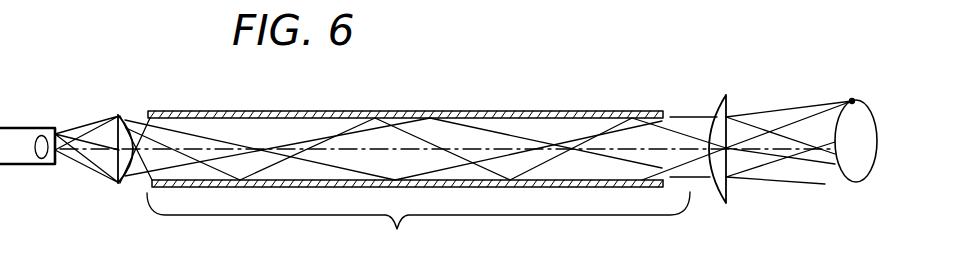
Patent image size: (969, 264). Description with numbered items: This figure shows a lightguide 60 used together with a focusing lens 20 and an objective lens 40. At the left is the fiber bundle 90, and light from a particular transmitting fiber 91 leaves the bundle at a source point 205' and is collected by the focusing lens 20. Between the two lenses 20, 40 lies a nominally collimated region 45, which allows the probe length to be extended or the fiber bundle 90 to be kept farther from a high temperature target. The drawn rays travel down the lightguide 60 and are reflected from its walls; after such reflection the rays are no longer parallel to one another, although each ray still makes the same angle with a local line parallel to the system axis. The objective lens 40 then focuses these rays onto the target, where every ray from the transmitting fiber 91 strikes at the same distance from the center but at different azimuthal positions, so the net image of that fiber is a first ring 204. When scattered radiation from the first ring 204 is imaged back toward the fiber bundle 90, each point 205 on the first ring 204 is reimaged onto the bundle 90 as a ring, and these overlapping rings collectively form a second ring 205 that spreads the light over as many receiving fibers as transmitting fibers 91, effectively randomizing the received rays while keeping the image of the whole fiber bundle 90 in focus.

The fiber bundle 90 is at (28, 128).
The transmitting fiber 91 is at (74, 113).
The source emission point 205' is at (60, 179).
The focusing lens 20 is at (126, 118).
The lightguide 60 is at (475, 111).
The nominally collimated region 45 is at (418, 228).
The objective lens 40 is at (713, 101).
The first ring 204 is at (853, 182).
The point on the first ring / second ring 205 is at (817, 74).